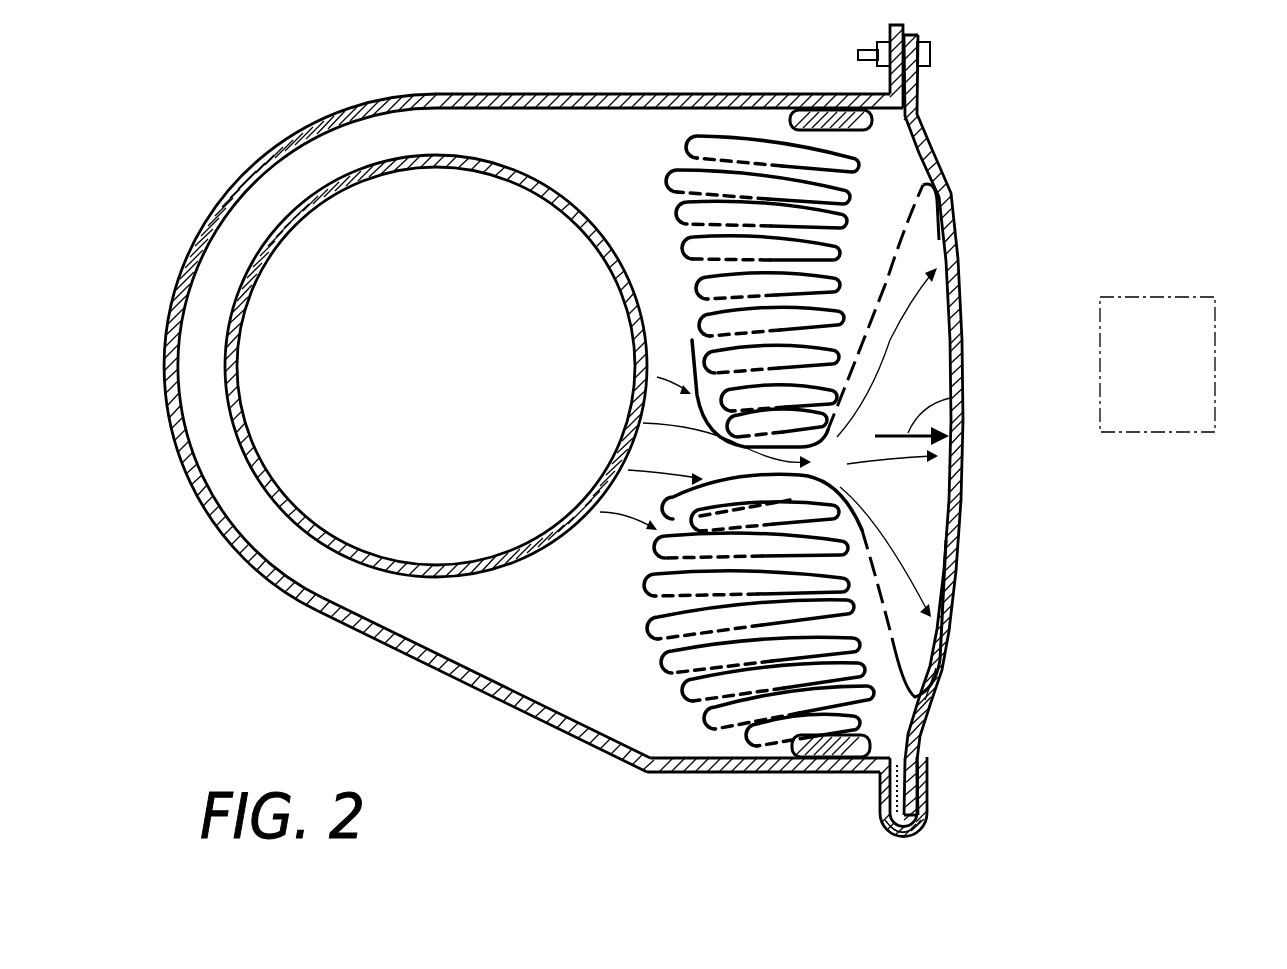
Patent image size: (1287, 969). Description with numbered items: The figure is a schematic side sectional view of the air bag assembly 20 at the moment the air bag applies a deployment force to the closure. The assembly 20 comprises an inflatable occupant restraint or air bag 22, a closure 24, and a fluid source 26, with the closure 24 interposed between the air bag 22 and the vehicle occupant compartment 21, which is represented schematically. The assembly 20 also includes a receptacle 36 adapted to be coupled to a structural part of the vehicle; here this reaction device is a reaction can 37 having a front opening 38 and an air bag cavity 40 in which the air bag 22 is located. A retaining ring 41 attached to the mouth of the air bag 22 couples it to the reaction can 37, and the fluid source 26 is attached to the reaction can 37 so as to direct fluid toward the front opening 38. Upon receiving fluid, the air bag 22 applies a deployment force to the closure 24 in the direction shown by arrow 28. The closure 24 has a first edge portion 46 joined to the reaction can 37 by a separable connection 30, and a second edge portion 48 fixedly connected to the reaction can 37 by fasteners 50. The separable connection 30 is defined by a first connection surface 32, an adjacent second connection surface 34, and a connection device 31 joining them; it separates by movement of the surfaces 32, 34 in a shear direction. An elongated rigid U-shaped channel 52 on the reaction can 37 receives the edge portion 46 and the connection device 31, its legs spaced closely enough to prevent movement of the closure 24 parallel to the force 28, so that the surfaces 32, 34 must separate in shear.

The air bag assembly 20 is at (370, 76).
The vehicle occupant compartment 21 is at (1174, 383).
The inflatable occupant restraint 22 is at (660, 625).
The closure 24 is at (967, 187).
The fluid source 26 is at (586, 198).
The deployment force 28 is at (958, 396).
The separable connection 30 is at (929, 778).
The connection device 31 is at (906, 838).
The first connection surface 32 is at (927, 800).
The second connection surface 34 is at (881, 795).
The receptacle 36 is at (574, 746).
The reaction can 37 is at (424, 662).
The front opening 38 is at (932, 393).
The air bag cavity 40 is at (689, 748).
The retaining ring 41 is at (800, 102).
The first edge portion 46 is at (920, 745).
The second edge portion 48 is at (918, 106).
The fasteners 50 is at (930, 44).
The U-shaped channel 52 is at (897, 838).